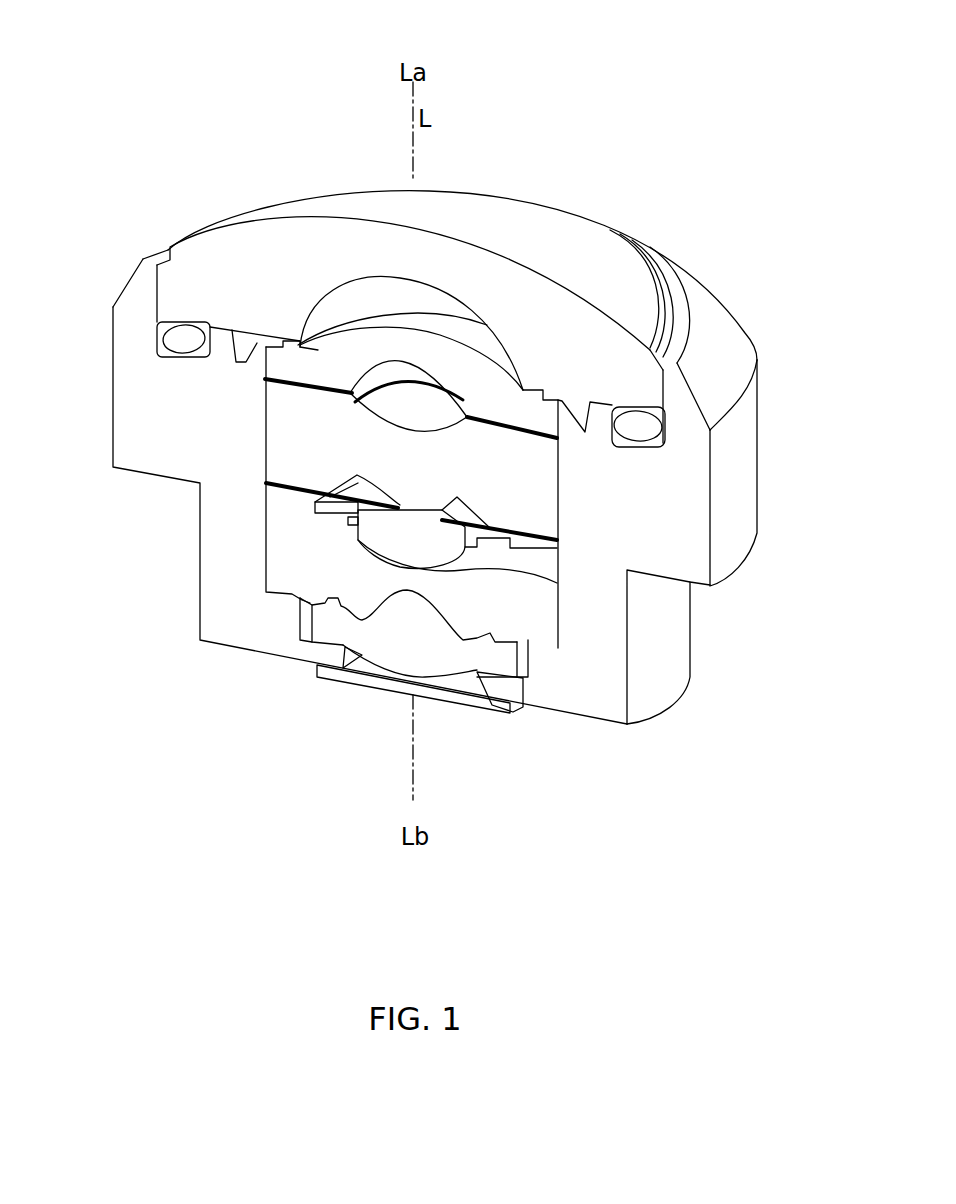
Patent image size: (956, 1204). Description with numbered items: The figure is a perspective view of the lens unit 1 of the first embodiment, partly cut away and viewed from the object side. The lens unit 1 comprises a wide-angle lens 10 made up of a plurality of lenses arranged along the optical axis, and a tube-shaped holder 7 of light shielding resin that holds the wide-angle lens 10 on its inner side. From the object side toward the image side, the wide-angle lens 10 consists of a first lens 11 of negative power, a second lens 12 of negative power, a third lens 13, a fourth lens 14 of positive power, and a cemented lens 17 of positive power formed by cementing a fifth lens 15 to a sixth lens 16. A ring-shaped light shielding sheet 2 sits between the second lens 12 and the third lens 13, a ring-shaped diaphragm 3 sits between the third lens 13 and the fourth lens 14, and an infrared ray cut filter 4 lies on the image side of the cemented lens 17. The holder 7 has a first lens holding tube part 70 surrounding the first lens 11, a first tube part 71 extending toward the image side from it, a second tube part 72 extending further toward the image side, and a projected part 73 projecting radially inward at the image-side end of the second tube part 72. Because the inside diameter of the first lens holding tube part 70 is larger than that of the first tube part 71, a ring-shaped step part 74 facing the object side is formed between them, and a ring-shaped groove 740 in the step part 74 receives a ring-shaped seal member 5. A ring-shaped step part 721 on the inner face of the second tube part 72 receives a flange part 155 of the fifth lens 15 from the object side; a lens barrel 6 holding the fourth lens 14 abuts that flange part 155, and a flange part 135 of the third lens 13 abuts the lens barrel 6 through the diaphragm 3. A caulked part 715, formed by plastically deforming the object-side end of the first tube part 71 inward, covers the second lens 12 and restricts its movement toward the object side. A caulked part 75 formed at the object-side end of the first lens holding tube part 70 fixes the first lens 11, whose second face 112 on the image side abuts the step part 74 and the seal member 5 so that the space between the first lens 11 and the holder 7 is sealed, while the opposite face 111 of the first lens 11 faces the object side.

The lens unit 1 is at (221, 106).
The light shielding sheet 2 is at (352, 392).
The diaphragm 3 is at (300, 497).
The infrared ray cut filter 4 is at (447, 703).
The seal member 5 is at (643, 430).
The lens barrel 6 is at (560, 567).
The holder 7 is at (435, 523).
The wide-angle lens 10 is at (464, 286).
The first lens 11 is at (313, 250).
The second lens 12 is at (317, 352).
The third lens 13 is at (314, 497).
The fourth lens 14 is at (387, 537).
The fifth lens 15 is at (310, 600).
The sixth lens 16 is at (362, 641).
The cemented lens 17 is at (130, 655).
The first lens holding tube part 70 is at (677, 388).
The first tube part 71 is at (660, 488).
The second tube part 72 is at (617, 640).
The projected part 73 is at (497, 690).
The step part 74 is at (605, 401).
The caulked part 75 is at (677, 363).
The cover top surface 111 is at (580, 250).
The second face 112 is at (590, 400).
The flange part 135 is at (283, 466).
The flange part 155 is at (350, 545).
The caulked part 715 is at (265, 336).
The step part 721 is at (529, 652).
The groove 740 is at (628, 447).